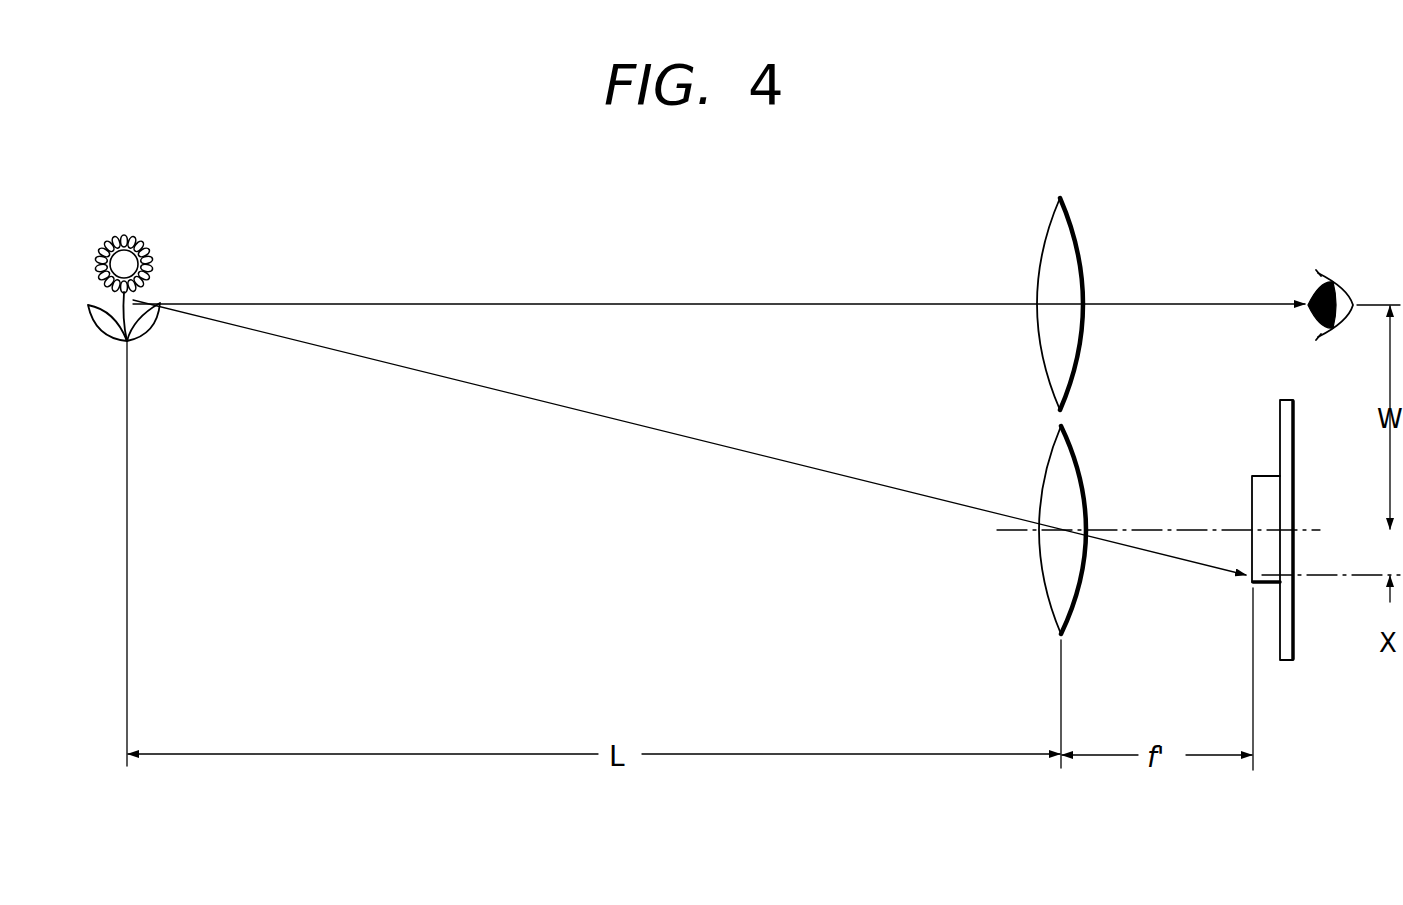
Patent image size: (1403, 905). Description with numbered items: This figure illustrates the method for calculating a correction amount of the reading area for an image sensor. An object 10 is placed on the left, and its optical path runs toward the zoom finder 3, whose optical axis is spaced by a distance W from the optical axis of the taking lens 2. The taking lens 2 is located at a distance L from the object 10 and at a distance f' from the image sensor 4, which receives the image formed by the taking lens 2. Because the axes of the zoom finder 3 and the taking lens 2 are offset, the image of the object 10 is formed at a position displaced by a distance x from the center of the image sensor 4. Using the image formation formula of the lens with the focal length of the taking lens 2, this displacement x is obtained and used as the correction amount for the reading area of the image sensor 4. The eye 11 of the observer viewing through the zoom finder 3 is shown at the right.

The object 10 is at (156, 236).
The eye of observer 11 is at (1348, 276).
The zoom finder 3 is at (1076, 224).
The taking lens 2 is at (1080, 458).
The image sensor 4 is at (1282, 400).